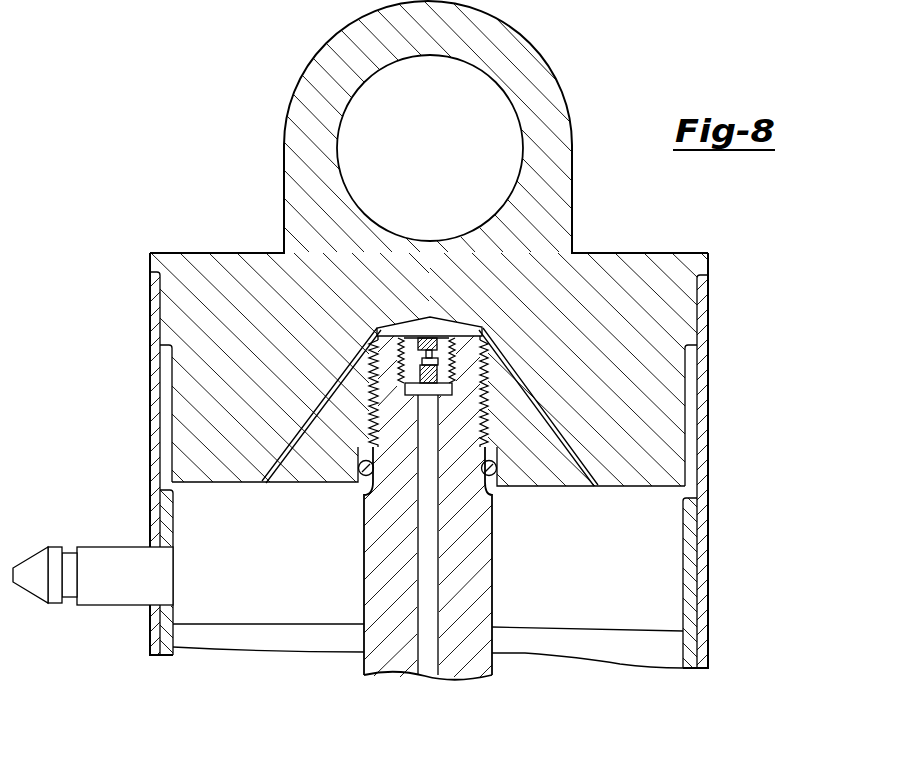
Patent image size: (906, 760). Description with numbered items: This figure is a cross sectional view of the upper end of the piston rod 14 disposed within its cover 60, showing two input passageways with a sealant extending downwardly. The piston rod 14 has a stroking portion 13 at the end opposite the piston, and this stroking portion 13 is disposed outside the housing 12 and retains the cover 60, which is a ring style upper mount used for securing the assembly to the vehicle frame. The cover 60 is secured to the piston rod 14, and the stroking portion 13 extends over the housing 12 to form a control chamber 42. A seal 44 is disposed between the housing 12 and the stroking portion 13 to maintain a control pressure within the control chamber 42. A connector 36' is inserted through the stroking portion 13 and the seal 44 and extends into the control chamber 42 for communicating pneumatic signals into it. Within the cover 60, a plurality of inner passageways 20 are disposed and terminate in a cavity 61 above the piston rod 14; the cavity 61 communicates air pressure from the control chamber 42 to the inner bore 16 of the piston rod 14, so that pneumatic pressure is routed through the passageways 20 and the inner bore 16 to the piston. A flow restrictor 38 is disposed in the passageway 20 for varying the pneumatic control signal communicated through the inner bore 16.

The housing 12 is at (327, 624).
The stroking portion 13 is at (150, 312).
The piston rod 14 is at (493, 530).
The inner bore 16 is at (423, 583).
The input passageway 20 is at (263, 482).
The connector 36' is at (93, 558).
The flow restrictor 38 is at (438, 343).
The control chamber 42 is at (198, 510).
The seal 44 is at (167, 635).
The cover 60 is at (575, 202).
The cavity 61 is at (408, 328).